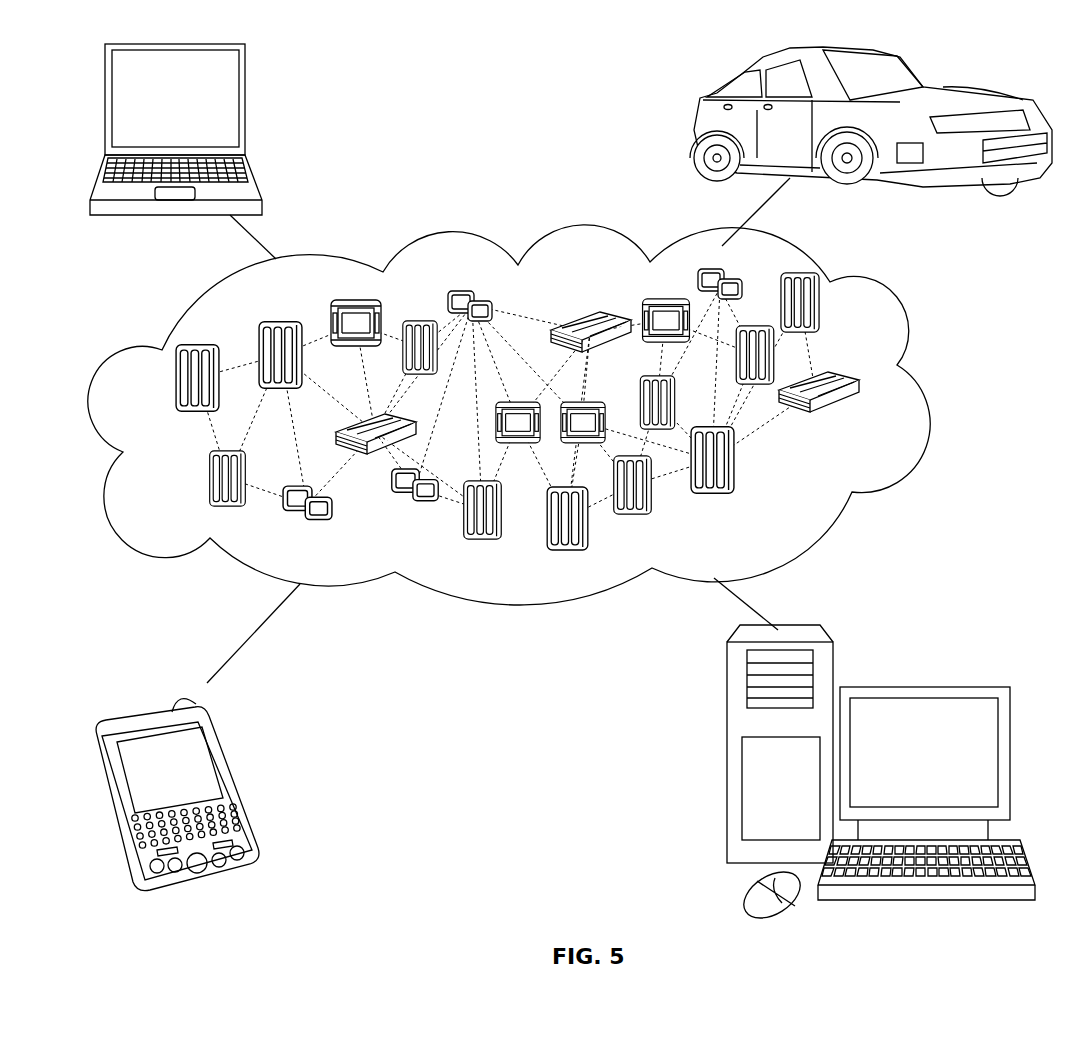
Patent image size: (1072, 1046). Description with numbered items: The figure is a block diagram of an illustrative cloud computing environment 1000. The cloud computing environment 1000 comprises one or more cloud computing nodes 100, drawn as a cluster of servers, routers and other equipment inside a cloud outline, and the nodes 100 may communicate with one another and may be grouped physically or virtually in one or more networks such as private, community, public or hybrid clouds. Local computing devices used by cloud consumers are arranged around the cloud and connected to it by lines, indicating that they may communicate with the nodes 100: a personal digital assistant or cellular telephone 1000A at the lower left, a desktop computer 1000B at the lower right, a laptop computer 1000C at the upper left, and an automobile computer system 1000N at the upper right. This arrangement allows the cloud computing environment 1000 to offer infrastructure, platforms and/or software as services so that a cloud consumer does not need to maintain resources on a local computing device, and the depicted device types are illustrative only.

The cloud computing nodes 100 is at (570, 486).
The cloud computing environment 1000 is at (925, 386).
The personal digital assistant (PDA) or cellular telephone 1000A is at (238, 781).
The desktop computer 1000B is at (921, 686).
The laptop computer 1000C is at (247, 110).
The automobile computer system 1000N is at (695, 122).